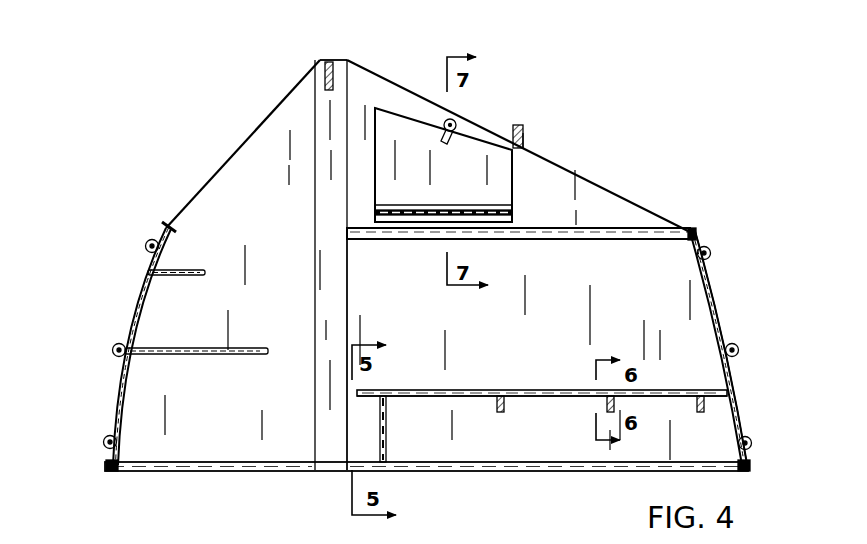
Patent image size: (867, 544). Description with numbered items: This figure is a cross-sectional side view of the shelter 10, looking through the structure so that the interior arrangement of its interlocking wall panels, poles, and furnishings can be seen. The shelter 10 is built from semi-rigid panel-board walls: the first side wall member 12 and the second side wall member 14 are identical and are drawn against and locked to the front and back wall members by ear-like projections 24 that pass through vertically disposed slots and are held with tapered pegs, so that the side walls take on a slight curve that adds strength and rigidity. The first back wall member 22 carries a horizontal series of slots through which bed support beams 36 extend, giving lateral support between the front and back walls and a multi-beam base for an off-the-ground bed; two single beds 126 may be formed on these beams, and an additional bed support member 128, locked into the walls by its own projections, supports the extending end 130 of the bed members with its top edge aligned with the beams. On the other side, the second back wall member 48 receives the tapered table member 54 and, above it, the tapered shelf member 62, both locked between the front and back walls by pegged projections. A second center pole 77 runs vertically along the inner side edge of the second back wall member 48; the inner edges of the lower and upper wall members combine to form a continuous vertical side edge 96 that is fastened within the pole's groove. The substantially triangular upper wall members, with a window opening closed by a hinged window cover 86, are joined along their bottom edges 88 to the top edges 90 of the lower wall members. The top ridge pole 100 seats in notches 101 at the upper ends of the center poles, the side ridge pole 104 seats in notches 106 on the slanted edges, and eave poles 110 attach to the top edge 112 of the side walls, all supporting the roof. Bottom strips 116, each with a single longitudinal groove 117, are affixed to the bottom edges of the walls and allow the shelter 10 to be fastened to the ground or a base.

The shelter 10 is at (610, 160).
The first side wall member 12 is at (722, 325).
The second side wall member 14 is at (133, 306).
The first back wall member 22 is at (688, 292).
The ear-like projections 24 is at (739, 351).
The bed support beams 36 is at (503, 413).
The second back wall member 48 is at (206, 177).
The table member 54 is at (180, 348).
The shelf member 62 is at (178, 270).
The second center pole 77 is at (313, 251).
The hinged window cover 86 is at (498, 187).
The bottom edges 88 is at (582, 232).
The top edges 90 is at (579, 240).
The continuous vertical side edge 96 is at (348, 276).
The top ridge pole 100 is at (327, 62).
The notches 101 is at (340, 62).
The side ridge pole 104 is at (516, 125).
The notches 106 is at (524, 136).
The eave poles 110 is at (693, 232).
The top edge 112 is at (710, 249).
The bottom strips 116 is at (577, 471).
The longitudinal groove 117 is at (117, 472).
The single beds 126 is at (561, 377).
The bed support member 128 is at (387, 456).
The extending end 130 is at (427, 377).